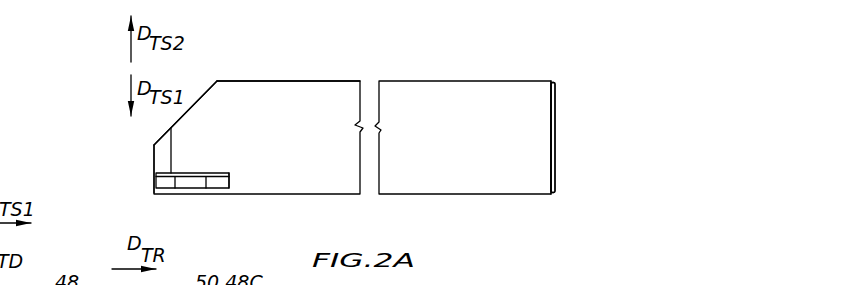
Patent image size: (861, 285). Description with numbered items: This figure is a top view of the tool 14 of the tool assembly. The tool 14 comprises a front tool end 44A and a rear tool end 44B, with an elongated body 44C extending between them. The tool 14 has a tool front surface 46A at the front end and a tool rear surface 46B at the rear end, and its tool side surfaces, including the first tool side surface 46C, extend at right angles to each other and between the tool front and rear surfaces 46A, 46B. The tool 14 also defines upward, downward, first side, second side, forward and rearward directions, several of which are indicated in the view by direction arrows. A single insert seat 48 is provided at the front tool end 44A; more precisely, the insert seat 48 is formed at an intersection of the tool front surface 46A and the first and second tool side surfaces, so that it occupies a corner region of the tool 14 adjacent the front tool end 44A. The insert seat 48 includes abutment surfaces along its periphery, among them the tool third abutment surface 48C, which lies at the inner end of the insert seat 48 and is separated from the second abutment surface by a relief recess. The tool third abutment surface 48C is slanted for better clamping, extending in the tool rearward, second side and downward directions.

The tool 14 is at (458, 72).
The front tool end 44A is at (145, 147).
The rear tool end 44B is at (558, 162).
The elongated body 44C is at (323, 80).
The tool front surface 46A is at (152, 163).
The tool rear surface 46B is at (557, 128).
The first tool side surface 46C is at (307, 150).
The insert seat 48 is at (147, 185).
The tool third abutment surface 48C is at (228, 185).